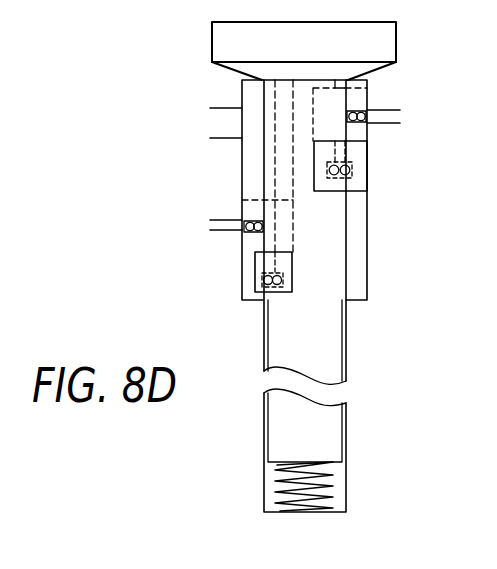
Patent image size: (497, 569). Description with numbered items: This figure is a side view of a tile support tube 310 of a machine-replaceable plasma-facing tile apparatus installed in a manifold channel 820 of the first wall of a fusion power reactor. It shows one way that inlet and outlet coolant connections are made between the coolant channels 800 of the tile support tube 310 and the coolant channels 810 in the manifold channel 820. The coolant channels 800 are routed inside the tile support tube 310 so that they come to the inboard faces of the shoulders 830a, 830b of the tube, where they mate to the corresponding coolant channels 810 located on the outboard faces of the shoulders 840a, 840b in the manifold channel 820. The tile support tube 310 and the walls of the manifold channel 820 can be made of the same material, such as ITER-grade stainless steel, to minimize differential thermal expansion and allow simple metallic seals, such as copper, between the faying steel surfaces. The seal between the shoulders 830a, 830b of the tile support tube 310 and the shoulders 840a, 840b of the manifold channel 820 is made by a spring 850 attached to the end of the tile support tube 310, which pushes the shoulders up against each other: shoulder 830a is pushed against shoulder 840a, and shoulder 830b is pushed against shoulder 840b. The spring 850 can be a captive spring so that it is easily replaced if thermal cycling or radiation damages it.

The coolant channels of the tile support tube 800 is at (283, 157).
The coolant channels of the manifold channel 810 is at (226, 230).
The manifold channel 820 is at (355, 264).
The shoulder of the tile support tube 830a is at (260, 269).
The shoulder of the tile support tube 830b is at (357, 185).
The shoulder of the manifold channel 840a is at (258, 244).
The shoulder of the manifold channel 840b is at (358, 130).
The tile support tube 310 is at (323, 348).
The spring 850 is at (275, 475).